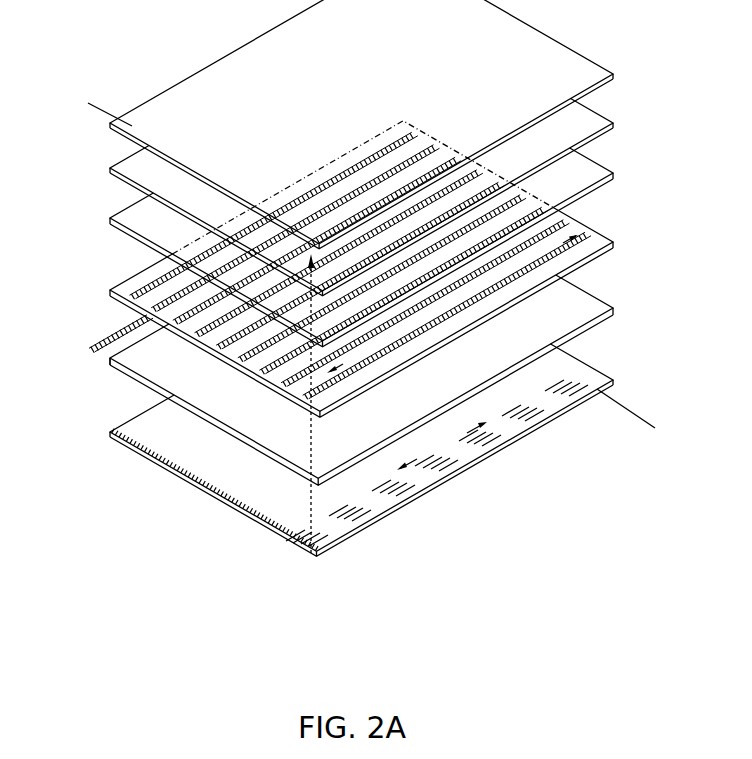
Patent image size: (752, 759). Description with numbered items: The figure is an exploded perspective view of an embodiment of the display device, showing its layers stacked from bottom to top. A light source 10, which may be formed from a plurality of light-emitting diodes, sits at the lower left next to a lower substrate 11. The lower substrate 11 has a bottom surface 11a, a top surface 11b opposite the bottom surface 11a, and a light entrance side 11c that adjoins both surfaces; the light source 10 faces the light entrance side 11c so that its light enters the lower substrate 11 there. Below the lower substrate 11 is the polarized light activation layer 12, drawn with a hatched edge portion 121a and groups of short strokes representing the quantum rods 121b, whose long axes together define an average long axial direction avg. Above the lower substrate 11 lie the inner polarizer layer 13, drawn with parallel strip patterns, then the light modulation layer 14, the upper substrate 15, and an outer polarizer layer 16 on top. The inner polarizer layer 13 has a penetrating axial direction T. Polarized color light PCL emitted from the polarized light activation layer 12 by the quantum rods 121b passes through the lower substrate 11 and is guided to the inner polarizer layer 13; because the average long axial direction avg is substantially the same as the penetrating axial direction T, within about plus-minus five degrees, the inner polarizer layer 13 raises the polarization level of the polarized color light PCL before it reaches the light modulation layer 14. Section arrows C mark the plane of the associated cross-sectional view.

The light source 10 is at (91, 350).
The lower substrate 11 is at (614, 309).
The bottom surface 11a is at (591, 328).
The top surface 11b is at (594, 306).
The light entrance side 11c is at (110, 358).
The polarized light activation layer 12 is at (352, 616).
The first pattern portion 121a is at (282, 540).
The quantum rods 121b is at (305, 542).
The inner polarizer layer 13 is at (615, 243).
The light modulation layer 14 is at (613, 174).
The upper substrate 15 is at (613, 124).
The outer polarizer layer 16 is at (613, 75).
The penetrating axial direction T is at (560, 256).
The polarized color light PCL is at (331, 404).
The average long axial direction avg is at (455, 438).
The section line C- C is at (638, 425).